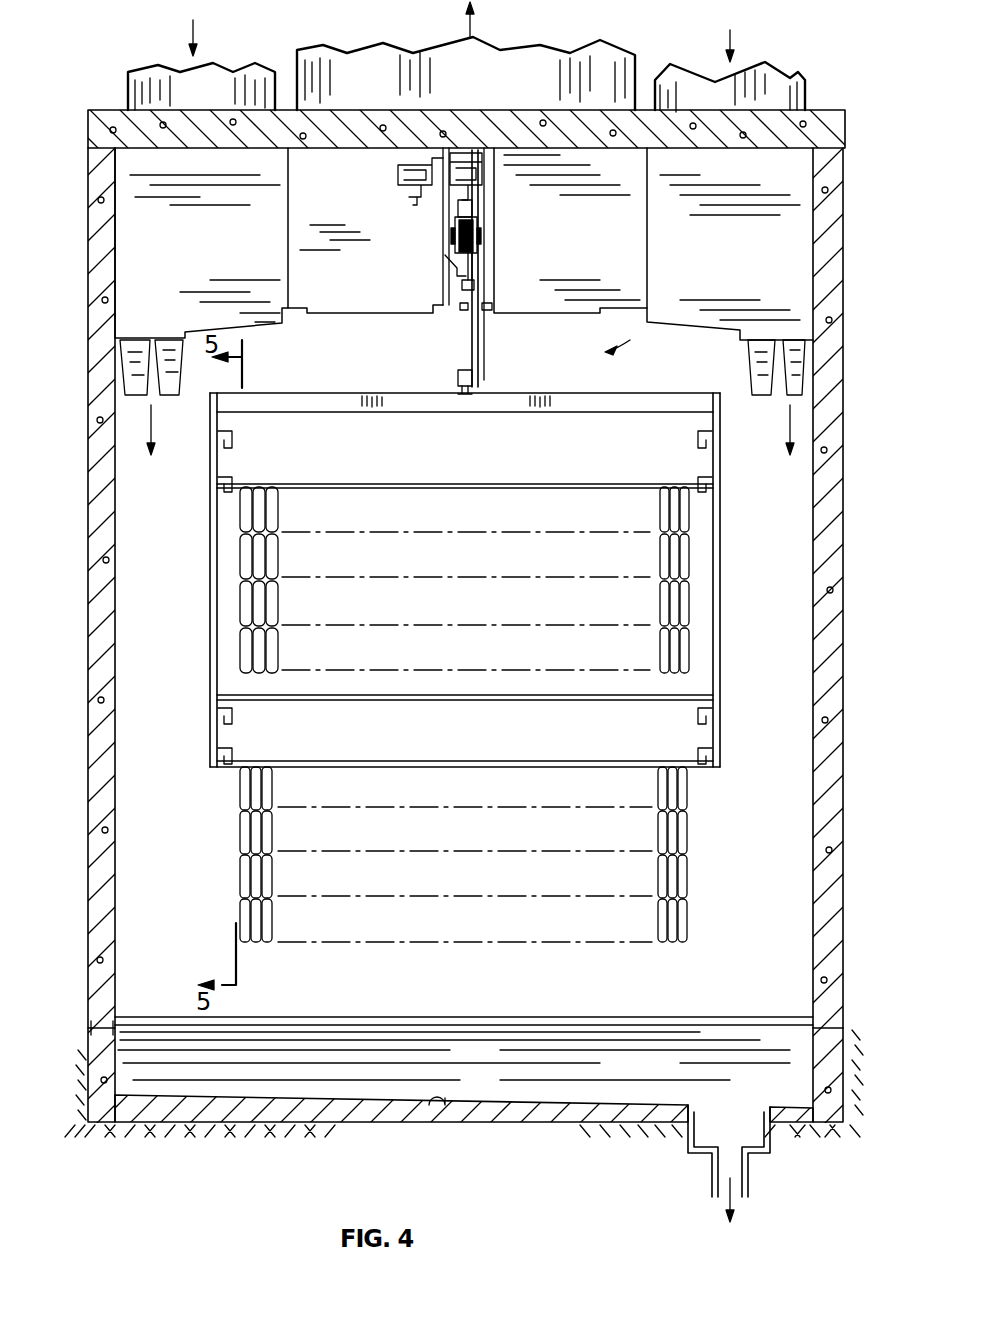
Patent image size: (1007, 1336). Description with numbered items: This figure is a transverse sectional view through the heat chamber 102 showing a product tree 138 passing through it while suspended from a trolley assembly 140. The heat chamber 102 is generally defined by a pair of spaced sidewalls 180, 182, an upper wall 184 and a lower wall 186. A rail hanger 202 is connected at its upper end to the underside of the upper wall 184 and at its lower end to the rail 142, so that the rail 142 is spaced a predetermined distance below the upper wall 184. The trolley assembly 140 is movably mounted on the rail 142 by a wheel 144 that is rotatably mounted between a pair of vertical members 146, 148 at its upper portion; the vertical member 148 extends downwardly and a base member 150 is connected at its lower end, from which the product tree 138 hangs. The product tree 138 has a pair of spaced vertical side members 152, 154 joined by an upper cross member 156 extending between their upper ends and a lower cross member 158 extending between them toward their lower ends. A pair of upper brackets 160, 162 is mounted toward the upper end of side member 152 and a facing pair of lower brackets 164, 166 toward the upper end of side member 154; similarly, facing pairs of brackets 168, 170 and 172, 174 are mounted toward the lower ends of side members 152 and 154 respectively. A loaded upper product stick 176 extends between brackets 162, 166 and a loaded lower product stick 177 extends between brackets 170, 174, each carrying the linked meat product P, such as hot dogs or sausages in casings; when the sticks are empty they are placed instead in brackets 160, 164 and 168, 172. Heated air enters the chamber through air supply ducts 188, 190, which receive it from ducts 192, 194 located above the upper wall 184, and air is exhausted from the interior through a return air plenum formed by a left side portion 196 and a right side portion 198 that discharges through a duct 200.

The heat chamber 102 is at (850, 118).
The product tree 138 is at (785, 611).
The trolley assembly 140 is at (486, 257).
The rail 142 is at (480, 262).
The wheel 144 is at (448, 258).
The vertical member 146 is at (455, 228).
The vertical member 148 is at (486, 290).
The base member 150 is at (458, 378).
The vertical side member 152 is at (210, 603).
The vertical side member 154 is at (722, 580).
The upper cross member 156 is at (455, 415).
The lower cross member 158 is at (490, 700).
The upper bracket 160 is at (222, 437).
The upper bracket 162 is at (222, 478).
The lower bracket 164 is at (710, 437).
The lower bracket 166 is at (710, 478).
The bracket 168 is at (220, 713).
The bracket 170 is at (222, 757).
The bracket 172 is at (712, 712).
The bracket 174 is at (712, 756).
The upper product stick 176 is at (450, 485).
The lower product stick 177 is at (503, 760).
The sidewall 180 is at (88, 448).
The sidewall 182 is at (843, 465).
The upper wall 184 is at (655, 100).
The lower wall 186 is at (435, 1110).
The air supply duct 188 is at (262, 332).
The air supply duct 190 is at (705, 332).
The duct 192 is at (128, 82).
The duct 194 is at (808, 100).
The left side portion 196 is at (405, 318).
The right side portion 198 is at (570, 320).
The duct 200 is at (540, 45).
The rail hanger 202 is at (440, 205).
The meat product P is at (236, 545).